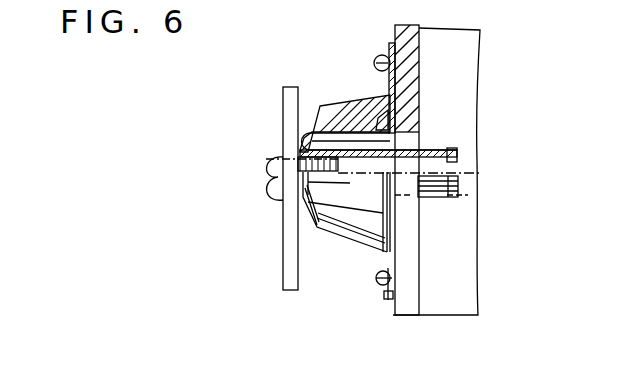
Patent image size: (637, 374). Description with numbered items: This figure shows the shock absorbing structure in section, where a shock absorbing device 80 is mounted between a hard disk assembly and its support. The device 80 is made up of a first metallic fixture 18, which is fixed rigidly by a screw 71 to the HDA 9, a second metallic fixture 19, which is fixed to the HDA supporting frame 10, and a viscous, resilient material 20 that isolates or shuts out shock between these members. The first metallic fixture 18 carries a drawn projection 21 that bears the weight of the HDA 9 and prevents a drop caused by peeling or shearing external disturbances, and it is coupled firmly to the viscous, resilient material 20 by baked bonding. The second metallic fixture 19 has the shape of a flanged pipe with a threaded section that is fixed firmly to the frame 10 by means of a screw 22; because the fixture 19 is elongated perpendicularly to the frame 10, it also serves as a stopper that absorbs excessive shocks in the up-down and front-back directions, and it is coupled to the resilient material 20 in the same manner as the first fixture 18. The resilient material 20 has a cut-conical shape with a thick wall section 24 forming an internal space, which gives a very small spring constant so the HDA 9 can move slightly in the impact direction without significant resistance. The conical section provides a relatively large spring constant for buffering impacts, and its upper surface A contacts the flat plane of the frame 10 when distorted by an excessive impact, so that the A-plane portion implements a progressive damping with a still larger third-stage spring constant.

The HDA 9 is at (463, 282).
The HDA supporting frame 10 is at (282, 280).
The first metallic fixture 18 is at (419, 88).
The second metallic fixture 19 is at (455, 158).
The viscous, resilient material 20 is at (330, 115).
The drawn projection 21 is at (378, 118).
The screw 22 is at (278, 192).
The thick wall section 24 is at (380, 143).
The screw 71 is at (380, 58).
The shock absorbing device 80 is at (344, 242).
The upper surface A is at (320, 124).